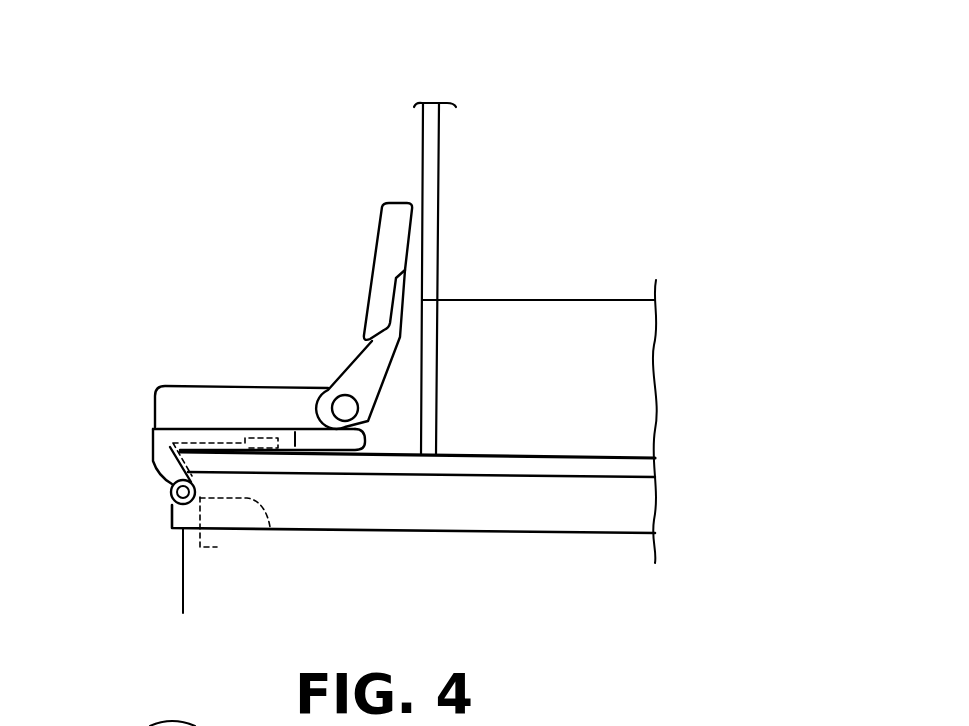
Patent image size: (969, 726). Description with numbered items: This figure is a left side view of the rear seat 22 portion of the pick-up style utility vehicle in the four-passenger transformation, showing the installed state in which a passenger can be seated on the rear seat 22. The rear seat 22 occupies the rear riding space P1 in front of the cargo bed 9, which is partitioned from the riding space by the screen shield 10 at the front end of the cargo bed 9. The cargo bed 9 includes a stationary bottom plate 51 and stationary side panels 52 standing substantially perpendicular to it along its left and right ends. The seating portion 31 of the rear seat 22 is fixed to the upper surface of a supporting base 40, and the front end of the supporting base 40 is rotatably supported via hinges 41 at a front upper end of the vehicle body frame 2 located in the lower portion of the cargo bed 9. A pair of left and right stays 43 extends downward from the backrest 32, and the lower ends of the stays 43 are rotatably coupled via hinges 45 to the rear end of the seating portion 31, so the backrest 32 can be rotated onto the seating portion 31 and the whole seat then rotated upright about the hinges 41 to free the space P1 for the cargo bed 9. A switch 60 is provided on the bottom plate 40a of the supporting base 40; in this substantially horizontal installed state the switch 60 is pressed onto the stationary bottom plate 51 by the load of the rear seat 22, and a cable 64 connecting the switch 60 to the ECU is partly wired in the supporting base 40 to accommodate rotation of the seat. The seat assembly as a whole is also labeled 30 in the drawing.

The rear riding space P1 is at (282, 160).
The vehicle body 2 is at (557, 510).
The cargo bed 9 is at (678, 292).
The screen shield 10 is at (437, 181).
The rear seat 22 is at (285, 318).
The seat device 30 is at (233, 572).
The seating portion 31 is at (218, 385).
The backrest 32 is at (397, 203).
The supporting base 40 is at (153, 463).
The bottom plate 40a is at (296, 446).
The hinges 41 is at (172, 506).
The stays 43 is at (372, 368).
The hinges 45 is at (351, 409).
The stationary bottom plate 51 is at (647, 467).
The stationary side panels 52 is at (560, 300).
The switch 60 is at (270, 450).
The cable 64 is at (270, 527).